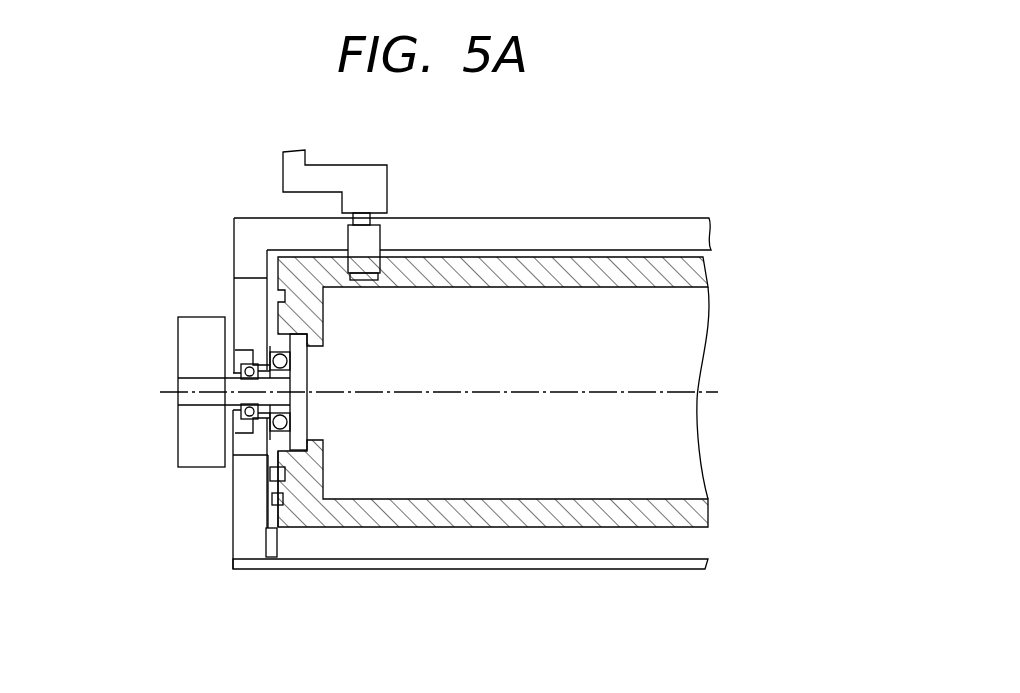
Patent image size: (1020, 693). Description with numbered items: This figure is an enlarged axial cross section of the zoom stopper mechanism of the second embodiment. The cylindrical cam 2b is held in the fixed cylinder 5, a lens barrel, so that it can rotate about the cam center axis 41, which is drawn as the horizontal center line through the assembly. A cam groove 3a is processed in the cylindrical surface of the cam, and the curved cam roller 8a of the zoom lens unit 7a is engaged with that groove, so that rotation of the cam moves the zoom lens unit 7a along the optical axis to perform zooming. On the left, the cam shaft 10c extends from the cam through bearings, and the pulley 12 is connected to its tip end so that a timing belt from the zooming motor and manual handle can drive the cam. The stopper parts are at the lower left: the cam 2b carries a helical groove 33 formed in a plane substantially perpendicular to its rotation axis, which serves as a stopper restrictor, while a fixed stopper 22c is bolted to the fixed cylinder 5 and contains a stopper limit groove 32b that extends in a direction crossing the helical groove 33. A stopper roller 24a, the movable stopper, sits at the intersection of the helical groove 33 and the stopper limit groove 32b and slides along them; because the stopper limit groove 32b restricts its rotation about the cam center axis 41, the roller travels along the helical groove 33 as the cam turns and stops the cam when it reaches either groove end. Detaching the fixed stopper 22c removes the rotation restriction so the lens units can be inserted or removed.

The cam 2b is at (663, 517).
The cam groove 3a is at (352, 275).
The fixed cylinder 5 is at (242, 297).
The zoom lens unit 7a is at (345, 177).
The curved cam roller 8a is at (377, 240).
The cam shaft 10c is at (300, 406).
The pulley 12 is at (190, 346).
The fixed stopper 22c is at (240, 487).
The stopper roller 24a is at (270, 473).
The stopper limit groove 32b is at (277, 530).
The helical groove 33 is at (283, 500).
The cam center axis 41 is at (165, 398).